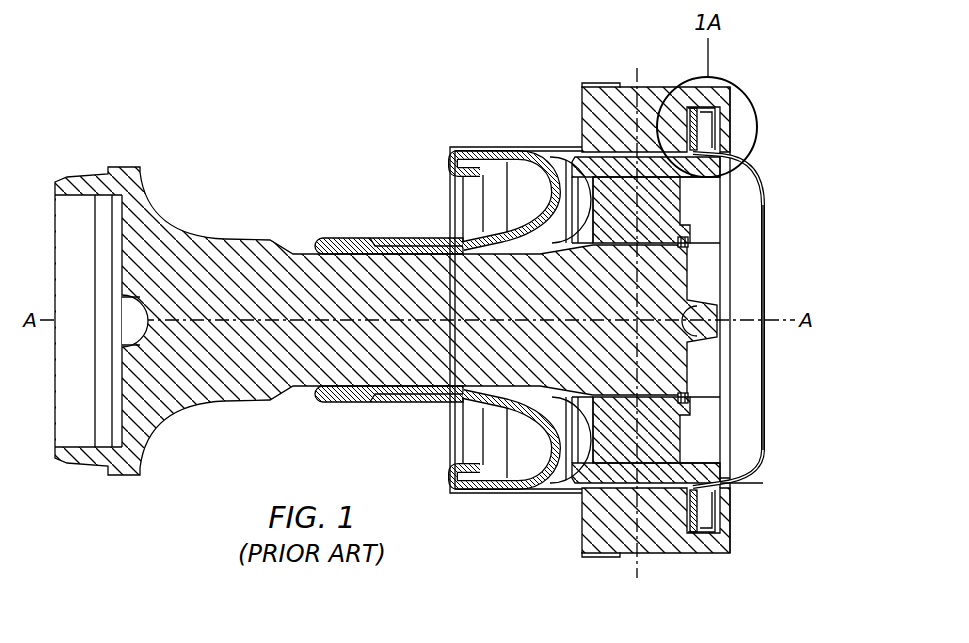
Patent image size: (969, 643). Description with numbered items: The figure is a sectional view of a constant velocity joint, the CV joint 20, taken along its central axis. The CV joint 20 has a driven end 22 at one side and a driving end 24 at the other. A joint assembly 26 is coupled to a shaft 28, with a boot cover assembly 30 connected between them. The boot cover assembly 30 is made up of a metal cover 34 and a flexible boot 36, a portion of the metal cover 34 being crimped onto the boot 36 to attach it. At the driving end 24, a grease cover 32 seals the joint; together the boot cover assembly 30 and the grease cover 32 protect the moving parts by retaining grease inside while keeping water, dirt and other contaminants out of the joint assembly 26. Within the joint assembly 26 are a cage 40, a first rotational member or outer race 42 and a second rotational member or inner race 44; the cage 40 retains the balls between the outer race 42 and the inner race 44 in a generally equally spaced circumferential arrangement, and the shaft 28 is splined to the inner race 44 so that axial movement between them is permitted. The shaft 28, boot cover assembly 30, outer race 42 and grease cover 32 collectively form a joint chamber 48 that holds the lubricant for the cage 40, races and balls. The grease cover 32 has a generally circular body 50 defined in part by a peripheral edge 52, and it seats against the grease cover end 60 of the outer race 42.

The CV joint 20 is at (433, 72).
The driven end 22 is at (116, 143).
The driving end 24 is at (755, 561).
The joint assembly 26 is at (733, 458).
The shaft 28 is at (243, 252).
The boot cover assembly 30 is at (491, 509).
The grease cover 32 is at (772, 232).
The metal cover 34 is at (530, 490).
The flexible boot 36 is at (415, 395).
The cage 40 is at (693, 213).
The first rotational member or outer race 42 is at (645, 100).
The second rotational member or inner race 44 is at (660, 420).
The joint chamber 48 is at (557, 198).
The generally circular body 50 is at (768, 370).
The peripheral edge 52 is at (720, 120).
The grease cover end 60 is at (740, 91).